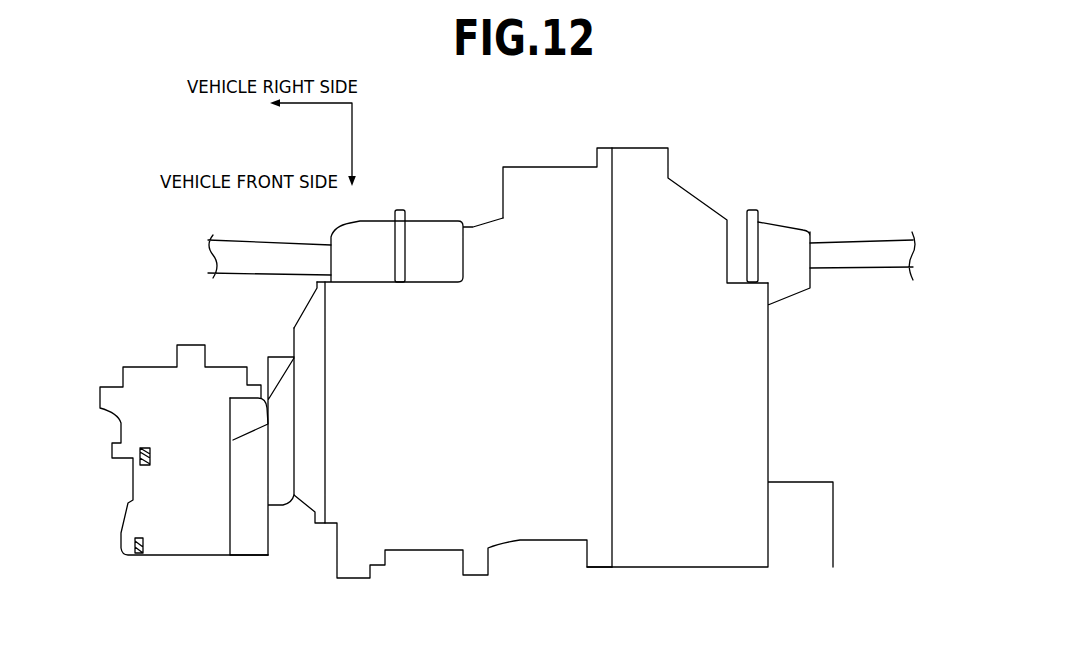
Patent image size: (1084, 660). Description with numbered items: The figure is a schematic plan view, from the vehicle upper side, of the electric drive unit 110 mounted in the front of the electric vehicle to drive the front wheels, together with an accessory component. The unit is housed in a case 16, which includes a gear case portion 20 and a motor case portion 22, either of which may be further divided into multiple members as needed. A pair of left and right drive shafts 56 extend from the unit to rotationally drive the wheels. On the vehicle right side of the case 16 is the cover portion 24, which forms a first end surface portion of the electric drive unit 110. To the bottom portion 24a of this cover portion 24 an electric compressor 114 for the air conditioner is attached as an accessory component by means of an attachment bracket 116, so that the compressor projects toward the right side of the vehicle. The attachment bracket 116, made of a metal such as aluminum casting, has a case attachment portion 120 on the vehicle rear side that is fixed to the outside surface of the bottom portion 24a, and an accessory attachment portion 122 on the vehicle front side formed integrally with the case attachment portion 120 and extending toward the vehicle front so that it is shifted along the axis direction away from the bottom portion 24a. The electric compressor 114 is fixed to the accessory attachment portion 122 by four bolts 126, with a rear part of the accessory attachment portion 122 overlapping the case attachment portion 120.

The electric drive unit 110 is at (717, 133).
The case 16 is at (749, 594).
The gear case portion 20 is at (672, 548).
The motor case portion 22 is at (425, 522).
The cover portion 24 is at (307, 500).
The bottom portion 24a is at (292, 358).
The drive shaft 56 is at (275, 252).
The electric compressor 114 is at (157, 382).
The attachment bracket 116 is at (283, 557).
The case attachment portion 120 is at (282, 408).
The accessory attachment portion 122 is at (242, 540).
The bolt 126 is at (112, 453).